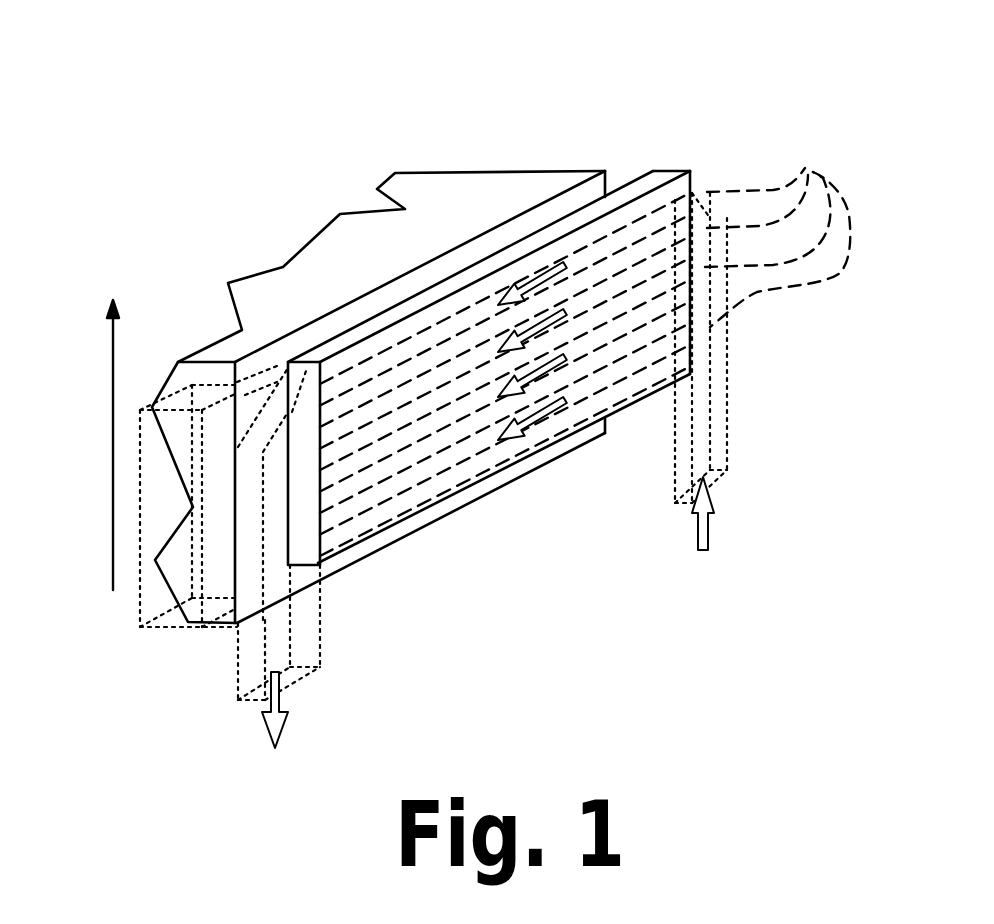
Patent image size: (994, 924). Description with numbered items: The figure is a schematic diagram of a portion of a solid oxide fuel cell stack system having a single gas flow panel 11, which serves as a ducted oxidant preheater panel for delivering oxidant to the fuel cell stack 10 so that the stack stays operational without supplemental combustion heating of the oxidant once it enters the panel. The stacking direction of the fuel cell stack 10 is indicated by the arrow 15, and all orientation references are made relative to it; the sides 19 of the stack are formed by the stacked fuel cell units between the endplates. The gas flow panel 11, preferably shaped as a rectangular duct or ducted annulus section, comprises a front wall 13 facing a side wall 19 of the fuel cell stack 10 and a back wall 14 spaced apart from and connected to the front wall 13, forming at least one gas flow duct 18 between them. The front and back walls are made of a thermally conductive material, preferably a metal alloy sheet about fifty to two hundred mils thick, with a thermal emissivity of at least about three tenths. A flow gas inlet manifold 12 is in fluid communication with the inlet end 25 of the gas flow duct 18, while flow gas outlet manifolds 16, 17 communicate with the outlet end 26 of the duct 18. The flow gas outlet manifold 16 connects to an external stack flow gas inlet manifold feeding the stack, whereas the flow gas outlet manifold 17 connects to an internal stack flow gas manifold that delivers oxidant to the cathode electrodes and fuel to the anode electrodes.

The fuel cell stack 10 is at (487, 168).
The gas flow panel 11 is at (636, 400).
The flow gas inlet manifold 12 is at (710, 486).
The front wall 13 is at (653, 171).
The back wall 14 is at (690, 171).
The arrow 15 is at (113, 423).
The flow gas outlet manifold 16 is at (307, 632).
The flow gas outlet manifold 17 is at (140, 602).
The gas flow duct 18 is at (805, 168).
The side wall 19 is at (578, 190).
The inlet end 25 is at (690, 333).
The outlet end 26 is at (303, 528).